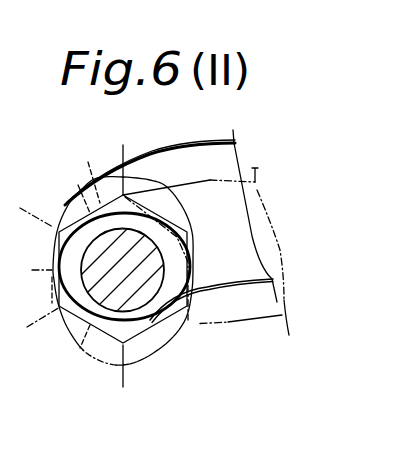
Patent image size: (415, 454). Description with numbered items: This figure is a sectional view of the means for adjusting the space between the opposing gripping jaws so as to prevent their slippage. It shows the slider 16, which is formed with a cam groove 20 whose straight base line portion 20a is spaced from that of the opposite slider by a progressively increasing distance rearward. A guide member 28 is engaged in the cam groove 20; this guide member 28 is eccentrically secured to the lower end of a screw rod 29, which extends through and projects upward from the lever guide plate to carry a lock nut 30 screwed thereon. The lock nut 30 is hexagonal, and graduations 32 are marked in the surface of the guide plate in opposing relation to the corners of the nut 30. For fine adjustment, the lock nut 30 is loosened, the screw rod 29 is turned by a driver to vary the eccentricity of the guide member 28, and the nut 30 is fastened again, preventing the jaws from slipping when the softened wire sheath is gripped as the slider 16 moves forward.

The slider 16 is at (221, 135).
The cam groove 20 is at (201, 282).
The straight base line portion 20a is at (246, 283).
The guide member 28 is at (153, 307).
The screw rod 29 is at (102, 248).
The lock nut 30 is at (124, 224).
The graduations 32 is at (79, 346).